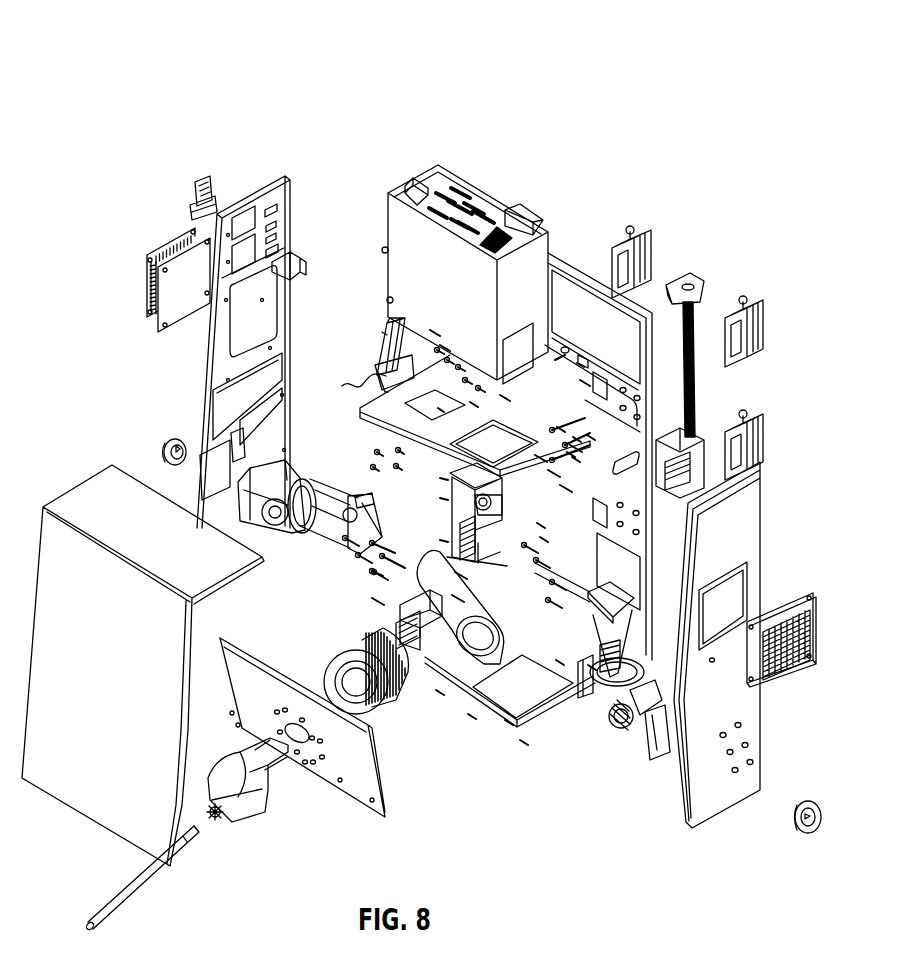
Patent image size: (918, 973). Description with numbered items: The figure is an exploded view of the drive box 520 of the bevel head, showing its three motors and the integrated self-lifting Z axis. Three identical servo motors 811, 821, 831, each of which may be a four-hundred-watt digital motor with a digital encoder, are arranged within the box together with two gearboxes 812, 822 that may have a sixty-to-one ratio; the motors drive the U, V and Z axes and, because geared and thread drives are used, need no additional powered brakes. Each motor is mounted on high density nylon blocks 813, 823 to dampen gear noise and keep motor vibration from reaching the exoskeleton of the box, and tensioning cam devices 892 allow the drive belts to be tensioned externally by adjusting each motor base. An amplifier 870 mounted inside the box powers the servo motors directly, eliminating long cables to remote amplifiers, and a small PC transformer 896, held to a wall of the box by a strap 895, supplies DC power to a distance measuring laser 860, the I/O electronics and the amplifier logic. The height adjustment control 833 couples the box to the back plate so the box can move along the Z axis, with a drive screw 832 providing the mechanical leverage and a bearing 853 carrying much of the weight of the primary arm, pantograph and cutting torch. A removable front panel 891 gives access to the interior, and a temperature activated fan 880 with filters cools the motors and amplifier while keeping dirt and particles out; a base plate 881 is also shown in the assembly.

The drive box 520 is at (112, 84).
The motor 811 is at (327, 540).
The gearbox 812 is at (292, 475).
The nylon block 813 is at (262, 462).
The motor 821 is at (588, 688).
The gearbox 822 is at (613, 725).
The nylon block 823 is at (660, 755).
The motor 831 is at (448, 508).
The drive screw 832 is at (693, 328).
The height adjustment control 833 is at (652, 242).
The bearing 853 is at (388, 707).
The distance measuring laser 860 is at (400, 612).
The amplifier 870 is at (392, 253).
The fan 880 is at (166, 250).
The base plate 881 is at (360, 413).
The front panel 891 is at (84, 470).
The tensioning cam device 892 is at (167, 440).
The strap 895 is at (297, 280).
The PC transformer 896 is at (385, 348).